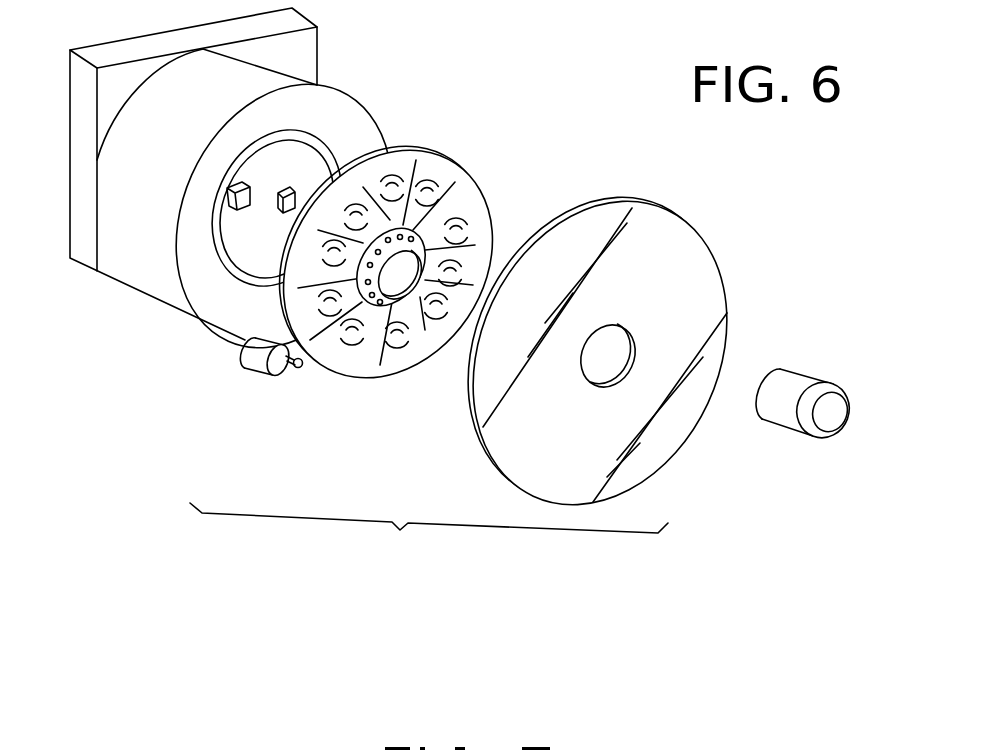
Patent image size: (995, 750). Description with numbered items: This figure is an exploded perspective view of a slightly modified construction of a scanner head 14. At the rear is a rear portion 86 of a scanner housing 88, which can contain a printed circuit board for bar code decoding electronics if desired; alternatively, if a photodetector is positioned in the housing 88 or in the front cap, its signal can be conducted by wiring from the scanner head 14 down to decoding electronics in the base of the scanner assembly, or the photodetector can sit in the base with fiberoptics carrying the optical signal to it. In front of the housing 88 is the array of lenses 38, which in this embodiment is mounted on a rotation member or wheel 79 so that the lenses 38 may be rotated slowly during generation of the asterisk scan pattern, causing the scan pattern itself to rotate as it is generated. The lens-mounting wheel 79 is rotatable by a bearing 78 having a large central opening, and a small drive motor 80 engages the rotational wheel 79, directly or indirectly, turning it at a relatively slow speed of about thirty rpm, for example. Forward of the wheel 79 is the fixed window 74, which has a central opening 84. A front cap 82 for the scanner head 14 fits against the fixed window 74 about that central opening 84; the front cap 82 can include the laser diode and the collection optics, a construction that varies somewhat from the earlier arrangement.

The scanner head 14 is at (385, 80).
The rear portion 86 is at (160, 32).
The scanner housing 88 is at (207, 97).
The drive motor 80 is at (185, 412).
The rotation member or wheel 79 is at (428, 131).
The lenses 38 is at (453, 182).
The bearing 78 is at (371, 306).
The fixed window 74 is at (727, 313).
The central opening 84 is at (632, 345).
The front cap 82 is at (810, 382).